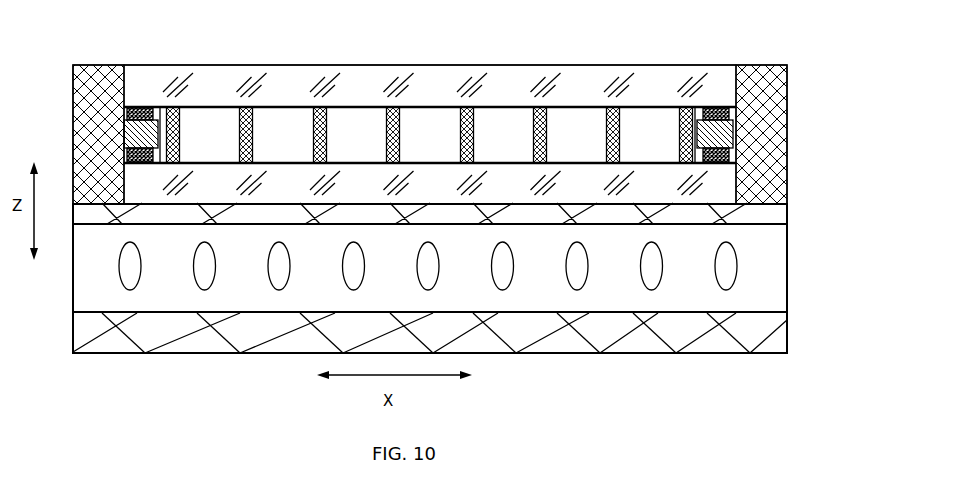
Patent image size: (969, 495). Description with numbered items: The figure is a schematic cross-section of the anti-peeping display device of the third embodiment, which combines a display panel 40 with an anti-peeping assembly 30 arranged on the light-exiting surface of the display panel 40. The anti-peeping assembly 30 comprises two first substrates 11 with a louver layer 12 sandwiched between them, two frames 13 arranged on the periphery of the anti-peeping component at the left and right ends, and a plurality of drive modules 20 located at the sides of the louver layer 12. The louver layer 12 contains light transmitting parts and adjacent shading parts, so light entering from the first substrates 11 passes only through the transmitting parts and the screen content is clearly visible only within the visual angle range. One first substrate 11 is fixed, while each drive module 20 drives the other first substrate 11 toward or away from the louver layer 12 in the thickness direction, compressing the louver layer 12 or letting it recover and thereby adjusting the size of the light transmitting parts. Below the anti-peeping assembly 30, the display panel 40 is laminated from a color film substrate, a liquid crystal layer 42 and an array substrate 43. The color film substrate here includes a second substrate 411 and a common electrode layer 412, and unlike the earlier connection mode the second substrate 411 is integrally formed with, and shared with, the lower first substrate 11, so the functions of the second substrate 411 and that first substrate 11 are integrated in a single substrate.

The first substrate 11 is at (727, 85).
The louver layer 12 is at (673, 133).
The frame 13 is at (100, 90).
The drive module 20 is at (144, 107).
The anti-peeping assembly 30 is at (836, 110).
The display panel 40 is at (840, 247).
The second substrate 411 is at (718, 180).
The common electrode layer 412 is at (755, 212).
The liquid crystal layer 42 is at (762, 263).
The array substrate 43 is at (763, 325).